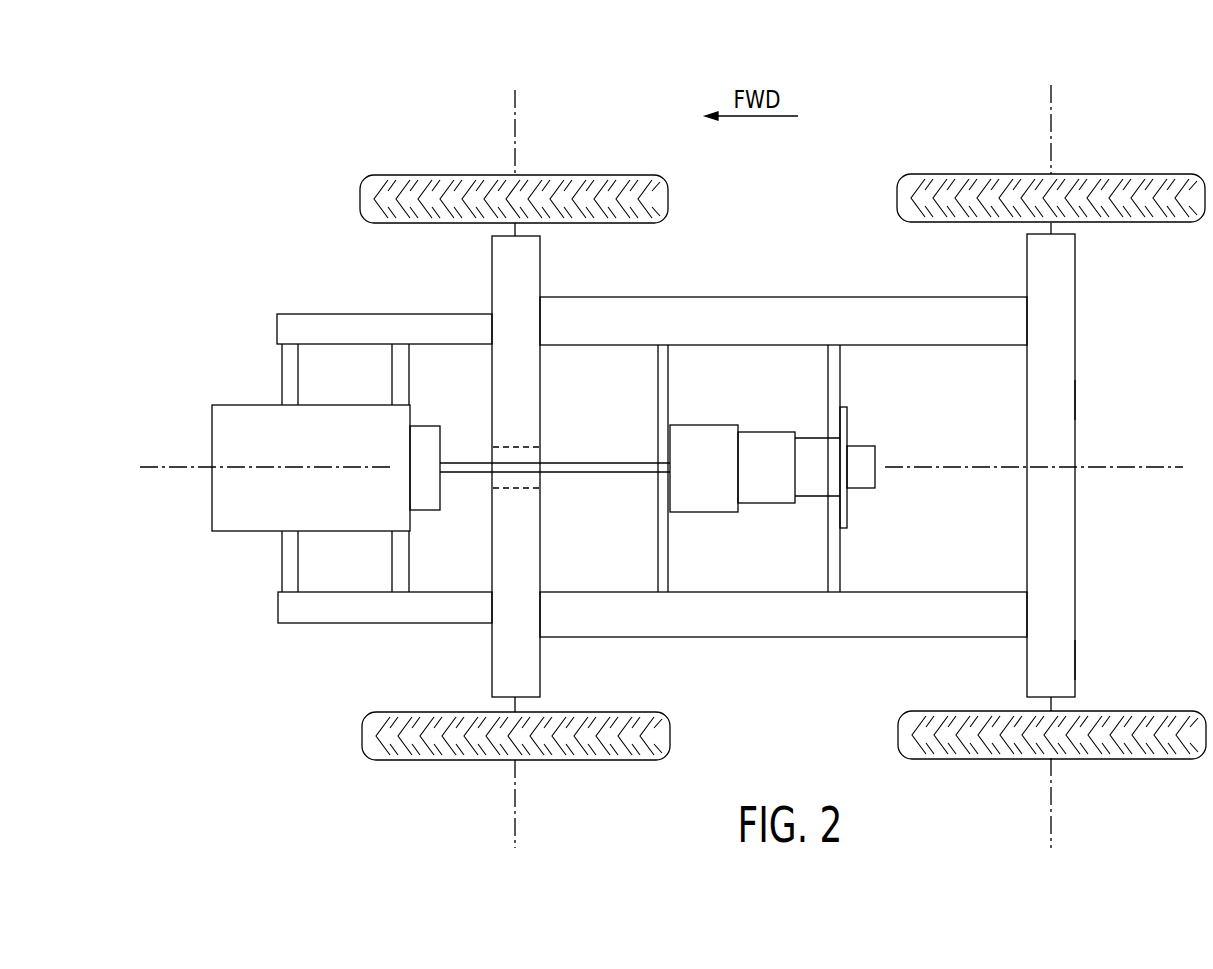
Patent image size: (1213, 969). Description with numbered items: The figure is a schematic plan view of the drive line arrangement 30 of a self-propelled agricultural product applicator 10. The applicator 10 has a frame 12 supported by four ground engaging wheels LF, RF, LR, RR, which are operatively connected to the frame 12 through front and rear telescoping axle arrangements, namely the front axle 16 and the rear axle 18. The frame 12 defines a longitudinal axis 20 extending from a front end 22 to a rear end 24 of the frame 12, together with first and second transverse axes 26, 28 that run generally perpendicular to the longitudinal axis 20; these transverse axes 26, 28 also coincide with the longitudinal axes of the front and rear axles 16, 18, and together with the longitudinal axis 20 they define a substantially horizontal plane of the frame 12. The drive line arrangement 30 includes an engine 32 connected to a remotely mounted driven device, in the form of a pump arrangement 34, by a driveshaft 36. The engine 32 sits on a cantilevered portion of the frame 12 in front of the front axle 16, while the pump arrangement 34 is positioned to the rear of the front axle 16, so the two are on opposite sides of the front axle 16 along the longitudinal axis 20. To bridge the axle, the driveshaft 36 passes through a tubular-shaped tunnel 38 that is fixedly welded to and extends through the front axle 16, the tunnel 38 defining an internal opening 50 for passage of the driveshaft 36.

The self-propelled agricultural product applicator 10 is at (906, 98).
The frame 12 is at (1062, 309).
The front axle 16 is at (497, 283).
The rear axle 18 is at (1060, 392).
The longitudinal axis 20 is at (178, 468).
The front end 22 is at (278, 607).
The rear end 24 is at (1077, 655).
The first transverse axis 26 is at (518, 806).
The second transverse axis 28 is at (1053, 806).
The drive line arrangement 30 is at (612, 388).
The engine 32 is at (248, 515).
The pump arrangement 34 is at (700, 436).
The driveshaft 36 is at (637, 473).
The tubular-shaped tunnel 38 is at (517, 446).
The internal opening 50 is at (550, 479).
The right front wheel RF is at (422, 176).
The right rear wheel RR is at (1090, 175).
The left front wheel LF is at (630, 760).
The left rear wheel LR is at (1160, 759).